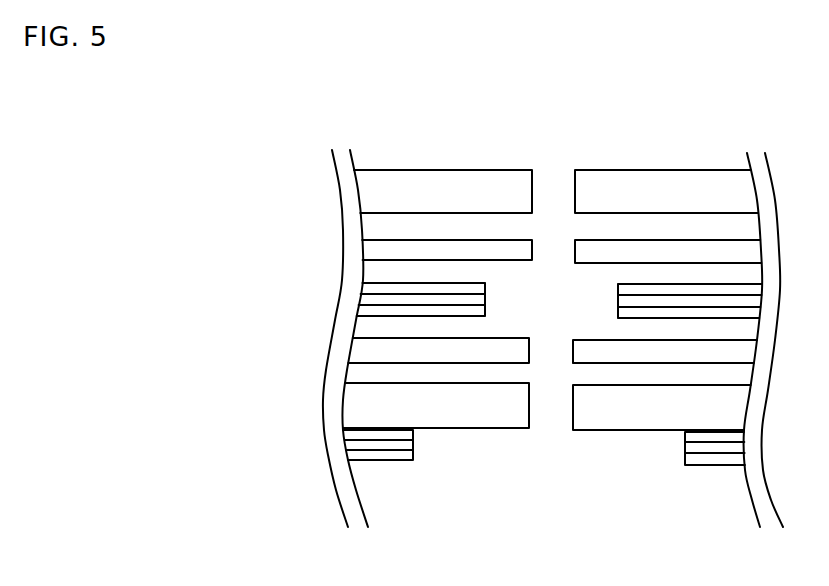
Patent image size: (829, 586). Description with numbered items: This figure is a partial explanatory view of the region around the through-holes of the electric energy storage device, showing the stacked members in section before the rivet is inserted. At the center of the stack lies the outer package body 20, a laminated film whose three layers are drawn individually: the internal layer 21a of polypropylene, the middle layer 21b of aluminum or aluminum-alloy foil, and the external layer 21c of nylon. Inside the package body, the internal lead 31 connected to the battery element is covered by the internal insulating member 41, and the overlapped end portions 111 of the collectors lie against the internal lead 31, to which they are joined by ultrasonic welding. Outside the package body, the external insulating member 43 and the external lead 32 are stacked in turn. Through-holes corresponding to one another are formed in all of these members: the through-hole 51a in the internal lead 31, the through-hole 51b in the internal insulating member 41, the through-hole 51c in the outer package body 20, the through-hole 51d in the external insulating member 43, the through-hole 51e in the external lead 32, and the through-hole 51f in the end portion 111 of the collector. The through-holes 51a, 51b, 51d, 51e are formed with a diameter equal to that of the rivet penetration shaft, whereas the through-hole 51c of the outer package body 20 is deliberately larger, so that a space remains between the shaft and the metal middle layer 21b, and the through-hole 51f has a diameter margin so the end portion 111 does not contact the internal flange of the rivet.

The outer package body 20 is at (482, 228).
The internal layer 21a is at (372, 283).
The middle layer 21b is at (390, 297).
The external layer 21c is at (402, 288).
The internal lead 31 is at (372, 410).
The external lead 32 is at (473, 185).
The internal insulating member 41 is at (380, 357).
The external insulating member 43 is at (435, 247).
The through-hole 51a is at (573, 413).
The through-hole 51b is at (573, 357).
The through-hole 51c is at (618, 293).
The through-hole 51d is at (574, 250).
The through-hole 51e is at (575, 193).
The through-hole 51f is at (413, 446).
The end portion of the collector 111 is at (368, 436).